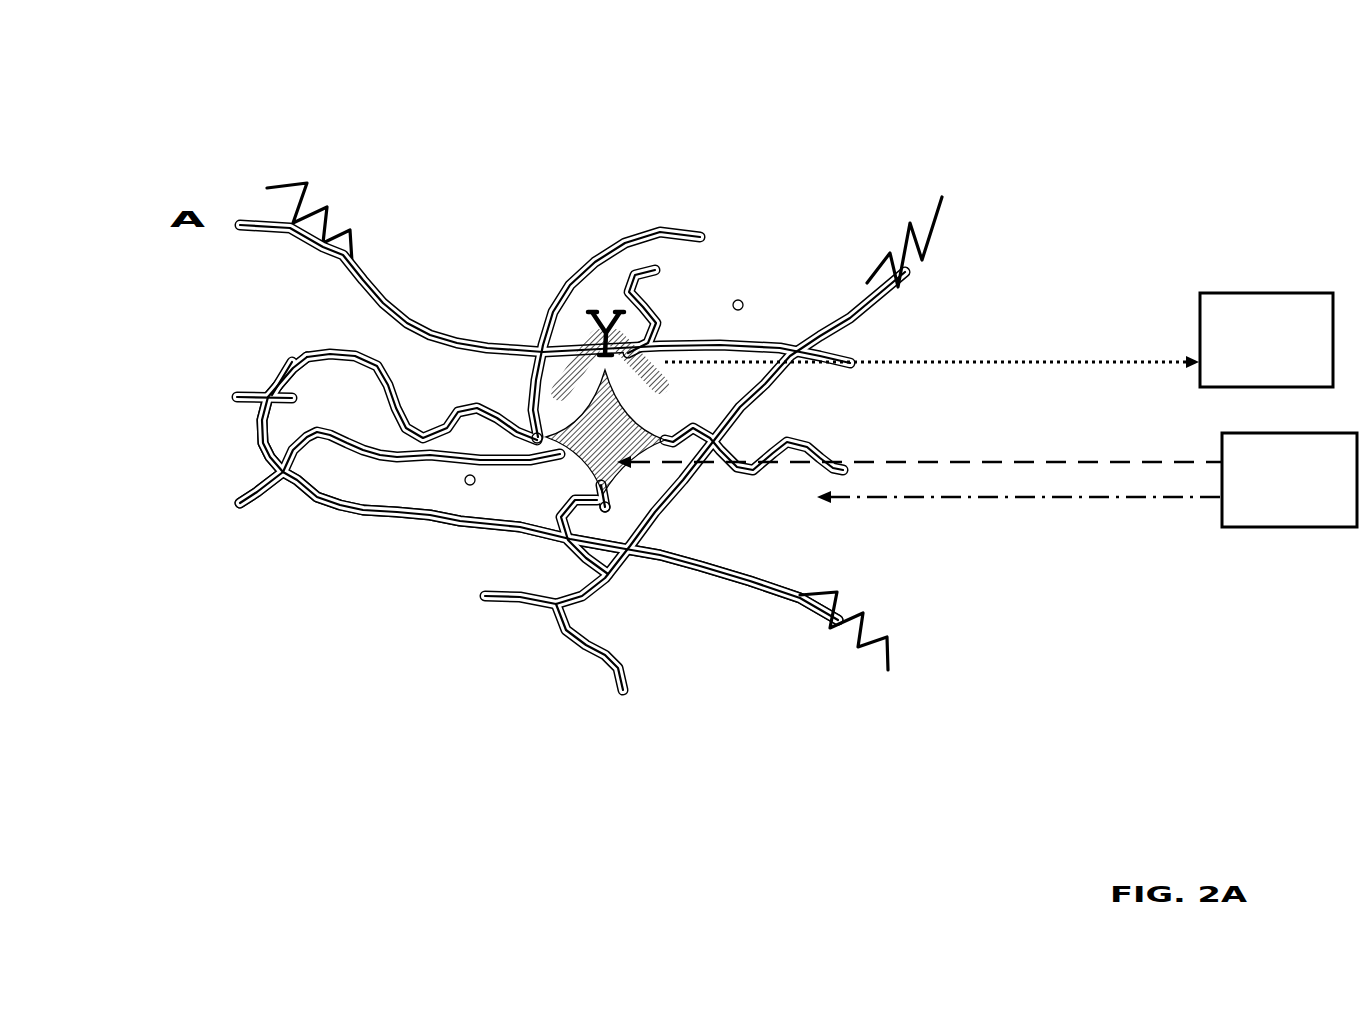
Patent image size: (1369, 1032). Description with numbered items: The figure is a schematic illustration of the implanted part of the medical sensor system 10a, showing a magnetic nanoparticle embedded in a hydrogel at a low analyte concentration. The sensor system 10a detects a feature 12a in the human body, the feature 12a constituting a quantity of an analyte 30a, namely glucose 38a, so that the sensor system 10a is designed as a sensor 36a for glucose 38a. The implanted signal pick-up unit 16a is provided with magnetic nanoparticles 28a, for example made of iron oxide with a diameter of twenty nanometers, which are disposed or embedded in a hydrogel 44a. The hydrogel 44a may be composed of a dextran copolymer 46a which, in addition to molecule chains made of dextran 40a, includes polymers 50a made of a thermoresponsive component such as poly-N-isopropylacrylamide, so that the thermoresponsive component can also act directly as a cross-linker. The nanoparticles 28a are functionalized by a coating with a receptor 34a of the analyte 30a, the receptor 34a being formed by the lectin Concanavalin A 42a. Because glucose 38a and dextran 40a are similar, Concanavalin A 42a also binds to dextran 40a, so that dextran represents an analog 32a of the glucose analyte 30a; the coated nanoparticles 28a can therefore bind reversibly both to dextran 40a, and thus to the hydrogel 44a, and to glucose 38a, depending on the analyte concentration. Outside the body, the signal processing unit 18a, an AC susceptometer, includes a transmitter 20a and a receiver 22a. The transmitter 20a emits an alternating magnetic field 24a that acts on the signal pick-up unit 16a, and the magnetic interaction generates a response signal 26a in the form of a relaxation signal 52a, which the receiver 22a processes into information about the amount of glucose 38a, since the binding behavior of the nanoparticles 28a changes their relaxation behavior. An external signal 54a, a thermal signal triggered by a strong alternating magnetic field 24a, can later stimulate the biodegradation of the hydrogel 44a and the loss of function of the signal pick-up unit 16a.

The medical sensor system 10a is at (1076, 160).
The feature 12a is at (746, 296).
The signal pick-up unit 16a is at (455, 694).
The signal processing unit 18a is at (1279, 353).
The transmitter 20a is at (1297, 515).
The receiver 22a is at (1297, 300).
The alternating magnetic field 24a is at (1000, 456).
The response signal 26a is at (663, 372).
The magnetic nanoparticles 28a is at (592, 423).
The analyte 30a is at (411, 546).
The analog 32a is at (366, 362).
The receptor 34a is at (802, 518).
The sensor 36a is at (250, 613).
The glucose 38a is at (468, 484).
The dextran 40a is at (533, 435).
The Concanavalin A 42a is at (605, 482).
The hydrogel 44a is at (283, 470).
The dextran copolymer 46a is at (697, 568).
The polymers 50a is at (300, 187).
The relaxation signal 52a is at (1052, 358).
The external signal 54a is at (1020, 500).